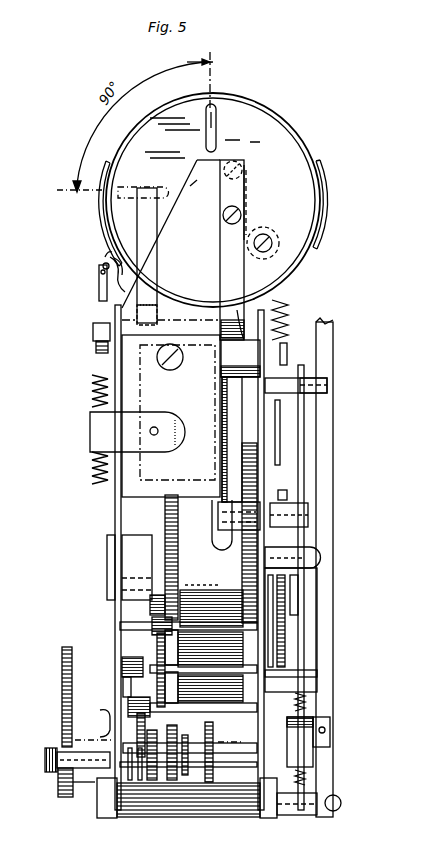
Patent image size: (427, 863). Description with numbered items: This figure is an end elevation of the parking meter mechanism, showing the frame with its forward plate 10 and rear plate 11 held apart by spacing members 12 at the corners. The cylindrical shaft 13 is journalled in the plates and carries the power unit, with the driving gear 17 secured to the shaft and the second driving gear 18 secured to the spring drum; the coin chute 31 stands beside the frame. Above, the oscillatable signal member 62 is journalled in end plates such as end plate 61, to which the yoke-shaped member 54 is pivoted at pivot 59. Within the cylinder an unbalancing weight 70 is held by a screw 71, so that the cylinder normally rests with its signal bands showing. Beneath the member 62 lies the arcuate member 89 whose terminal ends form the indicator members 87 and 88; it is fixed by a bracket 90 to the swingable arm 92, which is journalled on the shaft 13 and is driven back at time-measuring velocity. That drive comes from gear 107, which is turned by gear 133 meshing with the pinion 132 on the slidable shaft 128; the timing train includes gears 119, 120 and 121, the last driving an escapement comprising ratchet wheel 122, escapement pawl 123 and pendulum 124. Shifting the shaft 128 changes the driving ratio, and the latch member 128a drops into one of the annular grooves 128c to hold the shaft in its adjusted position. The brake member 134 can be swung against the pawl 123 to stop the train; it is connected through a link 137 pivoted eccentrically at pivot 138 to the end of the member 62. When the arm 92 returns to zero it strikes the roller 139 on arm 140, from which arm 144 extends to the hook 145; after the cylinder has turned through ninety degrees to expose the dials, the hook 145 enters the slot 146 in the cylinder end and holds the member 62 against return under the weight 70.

The forward plate 10 is at (261, 481).
The rear plate 11 is at (116, 518).
The spacing members 12 is at (256, 382).
The cylindrical shaft 13 is at (132, 565).
The driving gear 17 is at (172, 500).
The second driving gear 18 is at (245, 468).
The chute 31 is at (325, 344).
The member 54 is at (97, 422).
The pivot 59 is at (150, 431).
The end plate 61 is at (190, 192).
The signal member 62 is at (278, 118).
The unbalancing weight 70 is at (274, 247).
The screw 71 is at (276, 257).
The indicator member 87 is at (321, 222).
The indicator member 88 is at (100, 192).
The arcuate member 89 is at (297, 275).
The bracket 90 is at (102, 268).
The swingable arm 92 is at (101, 298).
The gear 107 is at (64, 660).
The gear 119 is at (142, 730).
The gear 120 is at (129, 689).
The gear 121 is at (158, 648).
The ratchet wheel 122 is at (282, 612).
The escapement pawl 123 is at (300, 566).
The pendulum 124 is at (308, 707).
The slidable shaft 128 is at (272, 760).
The latch member 128a is at (106, 712).
The annular grooves 128c is at (140, 780).
The pinion 132 is at (62, 750).
The gear 133 is at (58, 797).
The brake member 134 is at (292, 538).
The link 137 is at (246, 192).
The pivot 138 is at (241, 169).
The roller 139 is at (240, 314).
The arm 140 is at (105, 392).
The arm 144 is at (117, 248).
The hook 145 is at (140, 231).
The slot 146 is at (216, 118).